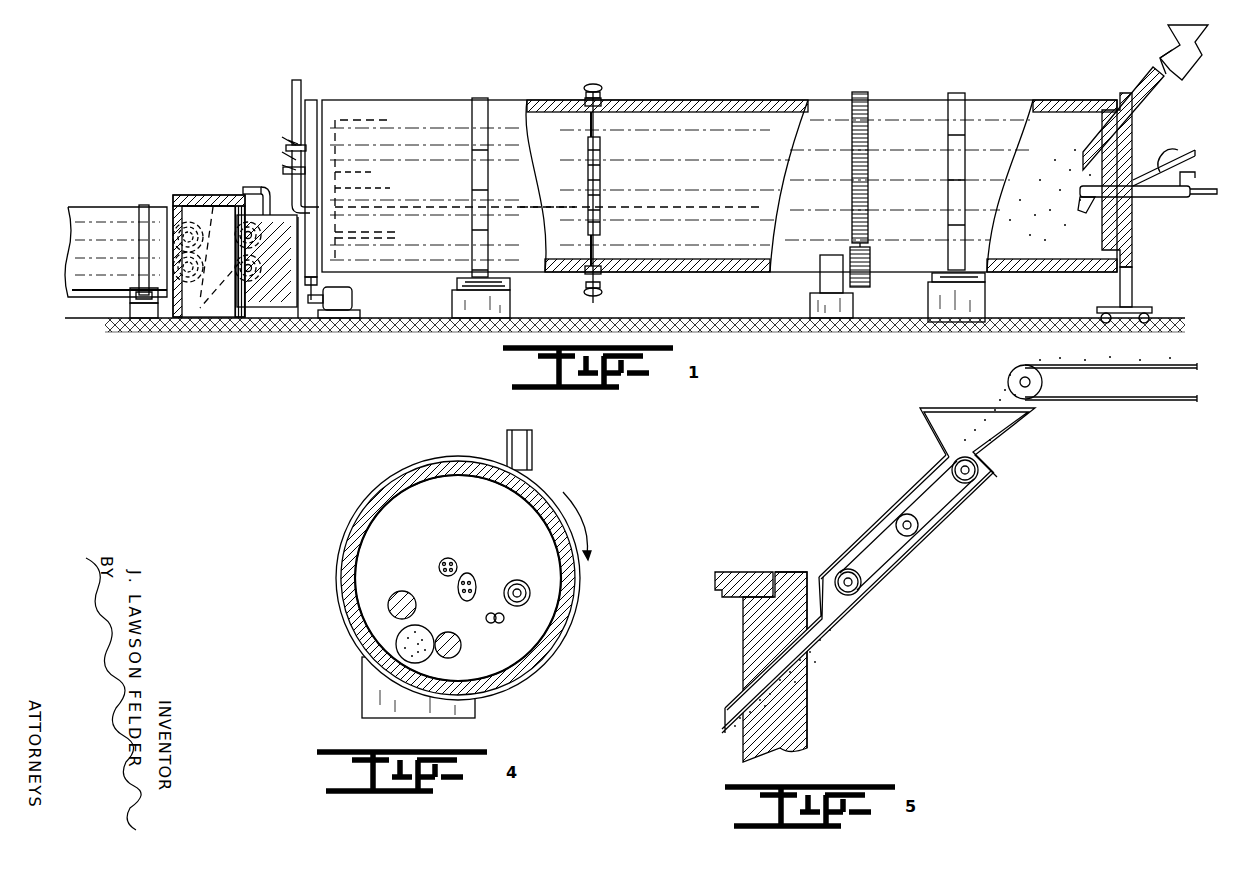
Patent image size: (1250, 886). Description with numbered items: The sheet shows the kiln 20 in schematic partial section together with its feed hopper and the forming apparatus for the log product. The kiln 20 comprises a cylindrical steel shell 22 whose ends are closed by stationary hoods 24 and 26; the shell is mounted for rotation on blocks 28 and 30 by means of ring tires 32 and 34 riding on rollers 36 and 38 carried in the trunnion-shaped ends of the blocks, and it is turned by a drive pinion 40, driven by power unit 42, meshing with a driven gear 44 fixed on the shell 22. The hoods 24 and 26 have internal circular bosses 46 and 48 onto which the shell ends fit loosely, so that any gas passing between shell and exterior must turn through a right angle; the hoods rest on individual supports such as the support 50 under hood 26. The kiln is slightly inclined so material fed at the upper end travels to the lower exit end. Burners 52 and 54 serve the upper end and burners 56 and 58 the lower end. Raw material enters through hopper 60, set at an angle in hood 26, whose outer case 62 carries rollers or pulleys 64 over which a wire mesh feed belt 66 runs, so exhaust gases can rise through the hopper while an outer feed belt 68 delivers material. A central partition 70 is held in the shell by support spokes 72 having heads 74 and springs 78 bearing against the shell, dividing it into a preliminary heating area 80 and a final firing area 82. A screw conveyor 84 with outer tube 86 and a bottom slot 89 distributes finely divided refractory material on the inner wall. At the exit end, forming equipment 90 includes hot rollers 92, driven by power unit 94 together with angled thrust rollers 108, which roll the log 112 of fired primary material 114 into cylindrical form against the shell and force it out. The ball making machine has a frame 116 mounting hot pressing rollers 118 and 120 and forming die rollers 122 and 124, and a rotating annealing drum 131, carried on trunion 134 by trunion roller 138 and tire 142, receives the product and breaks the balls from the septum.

In FIG. 1, the kiln 20 is at (706, 100).
In FIG. 1, the cylindrical steel shell 22 is at (685, 273).
In FIG. 4, the cylindrical steel shell 22 is at (570, 597).
In FIG. 5, the cylindrical steel shell 22 is at (744, 565).
In FIG. 1, the stationary hood 24 is at (315, 100).
In FIG. 4, the stationary hood 24 is at (376, 495).
In FIG. 1, the stationary hood 26 is at (1129, 131).
In FIG. 5, the stationary hood 26 is at (797, 572).
In FIG. 1, the block 28 is at (510, 308).
In FIG. 1, the block 30 is at (985, 308).
In FIG. 1, the ring tire 32 is at (485, 100).
In FIG. 1, the ring tire 34 is at (965, 93).
In FIG. 1, the roller 36 is at (510, 282).
In FIG. 1, the roller 38 is at (983, 276).
In FIG. 1, the drive pinion 40 is at (870, 280).
In FIG. 1, the power unit 42 is at (820, 267).
In FIG. 1, the driven gear 44 is at (860, 92).
In FIG. 1, the internal circular boss 46 is at (345, 123).
In FIG. 1, the internal circular boss 48 is at (1102, 123).
In FIG. 5, the internal circular boss 48 is at (743, 625).
In FIG. 1, the support 50 is at (1132, 285).
In FIG. 1, the burner 52 is at (1178, 146).
In FIG. 1, the burner 54 is at (1155, 198).
In FIG. 1, the burner 56 is at (357, 171).
In FIG. 4, the burner 56 is at (444, 560).
In FIG. 1, the burner 58 is at (377, 186).
In FIG. 4, the burner 58 is at (469, 574).
In FIG. 1, the hopper 60 is at (1195, 36).
In FIG. 5, the hopper 60 is at (997, 450).
In FIG. 1, the outer case 62 is at (1184, 62).
In FIG. 5, the outer case 62 is at (998, 478).
In FIG. 5, the rollers or pulleys 64 is at (861, 585).
In FIG. 5, the wire mesh feed belt 66 is at (945, 511).
In FIG. 5, the outer feed belt 68 is at (1114, 401).
In FIG. 1, the central partition 70 is at (601, 177).
In FIG. 1, the support spoke 72 is at (595, 120).
In FIG. 1, the head 74 is at (597, 86).
In FIG. 1, the spring 78 is at (584, 96).
In FIG. 1, the preliminary heating area 80 is at (757, 149).
In FIG. 1, the final firing area 82 is at (440, 149).
In FIG. 1, the screw conveyor 84 is at (520, 204).
In FIG. 4, the screw conveyor 84 is at (510, 578).
In FIG. 1, the outer tube 86 is at (419, 206).
In FIG. 4, the slot 89 is at (511, 607).
In FIG. 1, the forming equipment 90 is at (180, 196).
In FIG. 1, the hot rollers 92 is at (412, 234).
In FIG. 4, the hot rollers 92 is at (400, 586).
In FIG. 1, the power unit 94 is at (352, 296).
In FIG. 1, the refractory thrust roller 108 is at (304, 231).
In FIG. 4, the log 112 is at (422, 636).
In FIG. 5, the fired primary material 114 is at (821, 635).
In FIG. 1, the frame 116 is at (196, 202).
In FIG. 1, the refractory hot pressing roller 118 is at (210, 206).
In FIG. 1, the refractory hot pressing roller 120 is at (258, 279).
In FIG. 1, the forming die roller 122 is at (173, 240).
In FIG. 1, the forming die roller 124 is at (173, 266).
In FIG. 1, the rotating annealing drum 131 is at (88, 206).
In FIG. 1, the trunion 134 is at (132, 315).
In FIG. 1, the trunion roller 138 is at (130, 291).
In FIG. 1, the tire 142 is at (146, 205).